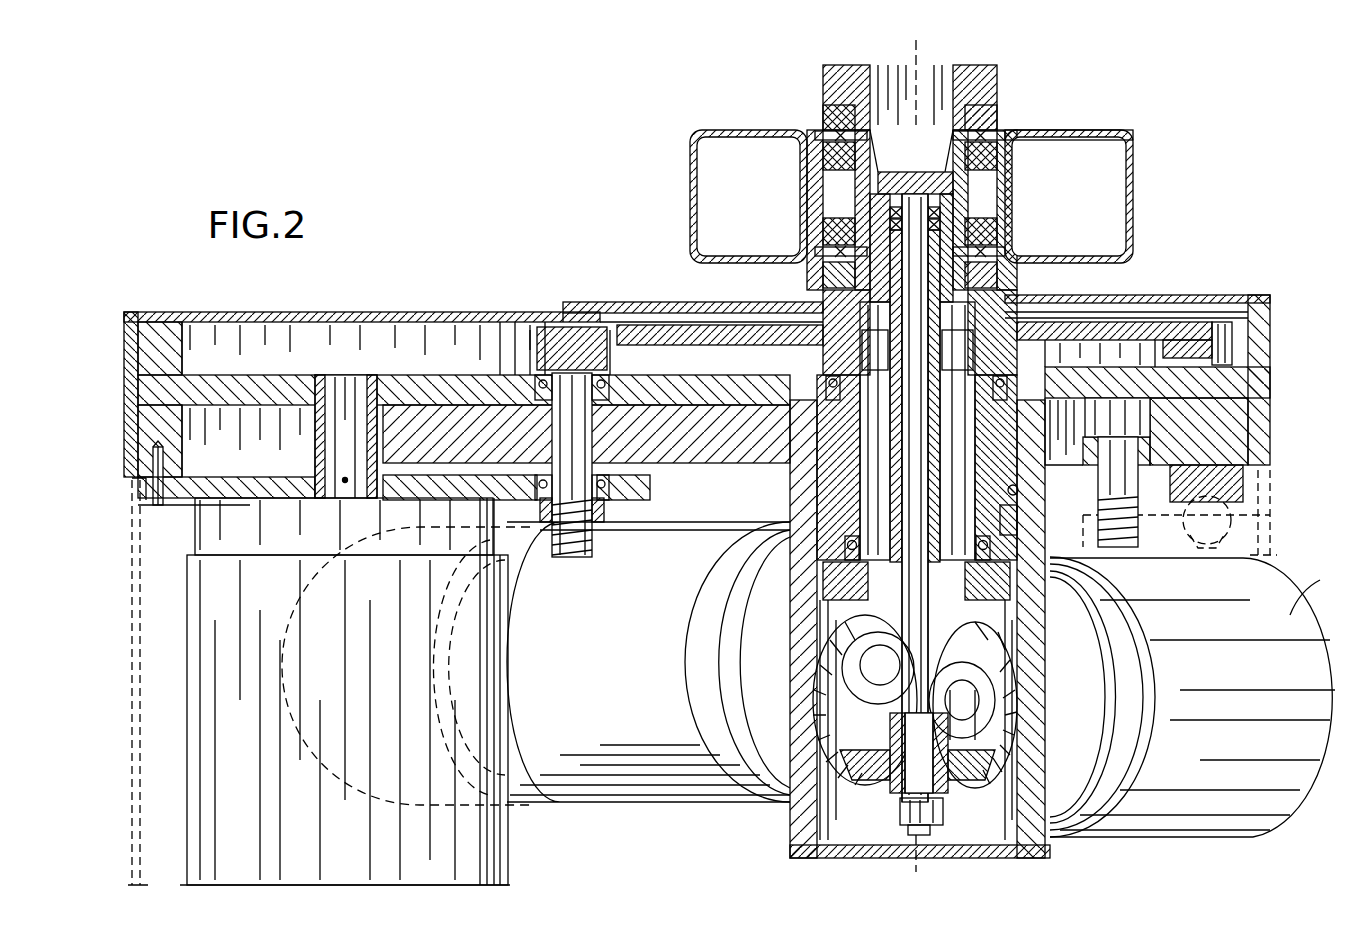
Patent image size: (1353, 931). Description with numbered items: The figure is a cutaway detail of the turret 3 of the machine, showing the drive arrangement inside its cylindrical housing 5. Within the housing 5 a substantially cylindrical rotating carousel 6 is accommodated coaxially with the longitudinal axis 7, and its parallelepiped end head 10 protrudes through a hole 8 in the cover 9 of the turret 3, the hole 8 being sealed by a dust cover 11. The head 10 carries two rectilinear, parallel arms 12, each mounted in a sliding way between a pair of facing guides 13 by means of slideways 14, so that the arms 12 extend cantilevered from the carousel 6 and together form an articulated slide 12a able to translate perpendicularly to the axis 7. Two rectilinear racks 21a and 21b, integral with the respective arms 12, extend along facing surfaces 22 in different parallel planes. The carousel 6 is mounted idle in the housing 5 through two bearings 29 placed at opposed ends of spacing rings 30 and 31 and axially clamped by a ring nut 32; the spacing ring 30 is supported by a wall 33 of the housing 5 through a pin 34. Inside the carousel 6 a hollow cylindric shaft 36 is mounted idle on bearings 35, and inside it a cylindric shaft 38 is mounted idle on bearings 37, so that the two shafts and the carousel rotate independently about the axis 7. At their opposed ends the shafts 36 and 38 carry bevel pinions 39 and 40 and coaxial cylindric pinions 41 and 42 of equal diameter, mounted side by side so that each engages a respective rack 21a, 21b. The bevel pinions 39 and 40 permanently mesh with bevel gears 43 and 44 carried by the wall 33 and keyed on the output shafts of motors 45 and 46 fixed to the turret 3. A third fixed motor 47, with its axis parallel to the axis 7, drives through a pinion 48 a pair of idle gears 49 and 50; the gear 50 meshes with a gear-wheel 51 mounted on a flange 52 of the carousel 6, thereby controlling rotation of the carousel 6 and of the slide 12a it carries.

The turret 3 is at (700, 590).
The cylindrical housing 5 is at (800, 480).
The rotating carousel 6 is at (1012, 298).
The longitudinal axis 7 is at (926, 53).
The hole 8 is at (1197, 293).
The cover 9 is at (404, 313).
The end head 10 is at (990, 100).
The dust cover 11 is at (640, 302).
The arms 12 is at (692, 146).
The articulated slide 12a is at (1062, 124).
The guides 13 is at (823, 115).
The slideways 14 is at (822, 176).
The rack 21a is at (866, 188).
The rack 21b is at (951, 163).
The facing surfaces 22 is at (815, 160).
The bearings 29 is at (1002, 380).
The spacing ring 30 is at (1030, 410).
The spacing ring 31 is at (1017, 520).
The ring nut 32 is at (1080, 583).
The wall 33 is at (1040, 706).
The pin 34 is at (1020, 490).
The bearings 35 is at (1000, 348).
The hollow cylindric shaft 36 is at (800, 690).
The bearings 37 is at (885, 212).
The cylindric shaft 38 is at (1030, 665).
The bevel pinion 39 is at (800, 650).
The bevel pinion 40 is at (992, 780).
The cylindric pinion 41 is at (942, 210).
The cylindric pinion 42 is at (945, 186).
The bevel gear 43 is at (835, 760).
The bevel gear 44 is at (1010, 730).
The motor 45 is at (676, 796).
The motor 46 is at (1320, 588).
The third fixed motor 47 is at (508, 838).
The pinion 48 is at (312, 450).
The gear 49 is at (690, 456).
The gear 50 is at (545, 328).
The gear-wheel 51 is at (1234, 350).
The flange 52 is at (692, 326).